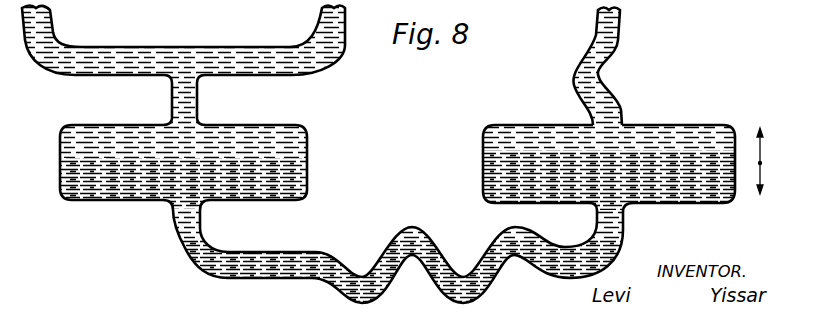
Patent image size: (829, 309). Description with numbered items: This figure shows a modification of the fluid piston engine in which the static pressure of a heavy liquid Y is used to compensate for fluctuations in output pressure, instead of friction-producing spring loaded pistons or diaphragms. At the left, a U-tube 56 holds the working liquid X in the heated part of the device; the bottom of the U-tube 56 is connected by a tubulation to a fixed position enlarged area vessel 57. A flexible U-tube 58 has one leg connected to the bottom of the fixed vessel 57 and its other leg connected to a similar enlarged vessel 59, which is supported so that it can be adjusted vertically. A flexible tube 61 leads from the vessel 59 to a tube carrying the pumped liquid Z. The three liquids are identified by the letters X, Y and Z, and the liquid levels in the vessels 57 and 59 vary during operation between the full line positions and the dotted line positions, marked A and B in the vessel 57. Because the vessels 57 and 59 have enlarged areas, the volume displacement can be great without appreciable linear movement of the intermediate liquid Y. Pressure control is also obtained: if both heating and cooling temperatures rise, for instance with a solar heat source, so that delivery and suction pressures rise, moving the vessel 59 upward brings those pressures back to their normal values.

The U-tube 56 is at (212, 56).
The fixed position enlarged area vessel 57 is at (242, 131).
The flexible U-tube 58 is at (268, 281).
The vessel 59 is at (663, 130).
The flexible tube 61 is at (606, 98).
The working liquid X is at (173, 88).
The heavy liquid Y is at (68, 191).
The pumped liquid Z is at (712, 128).
The level A is at (309, 138).
The level B is at (309, 157).